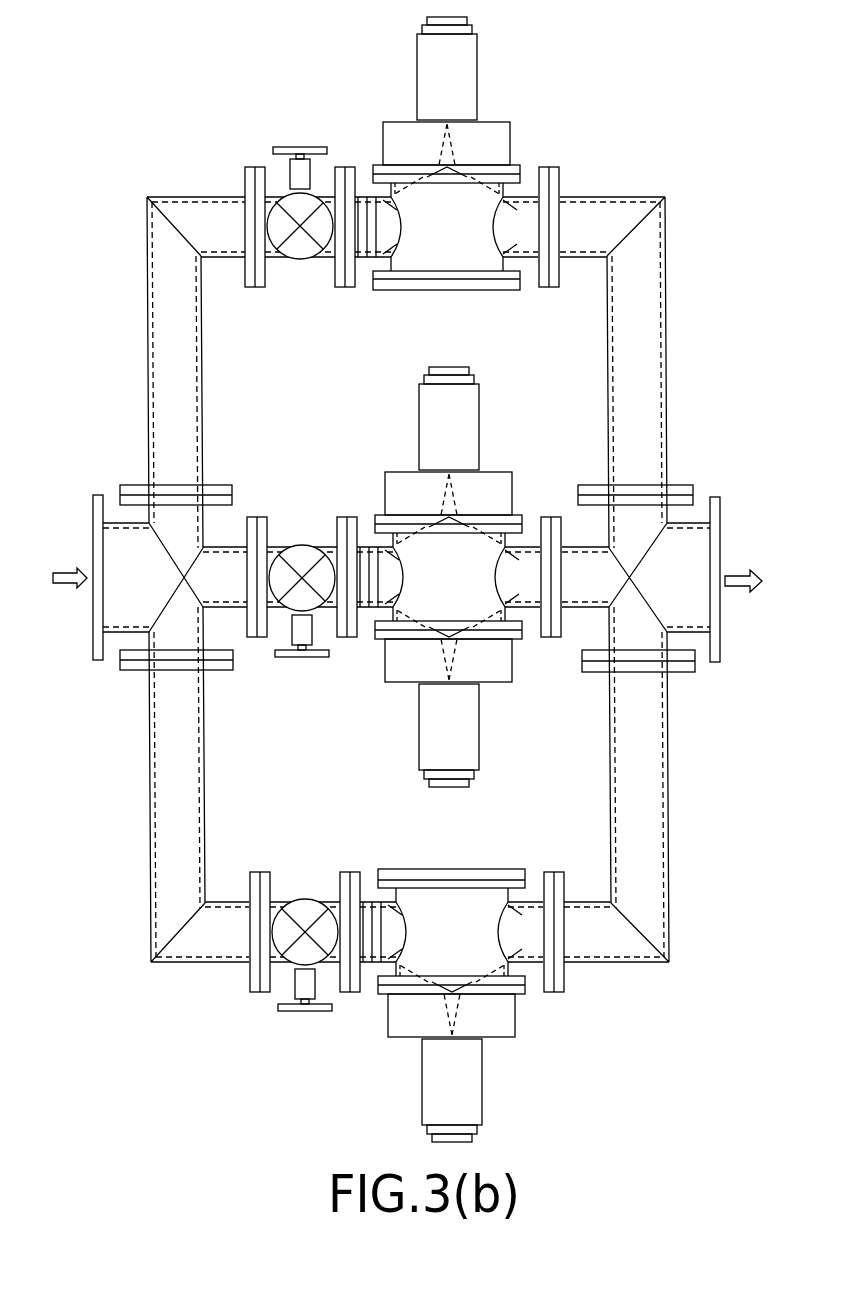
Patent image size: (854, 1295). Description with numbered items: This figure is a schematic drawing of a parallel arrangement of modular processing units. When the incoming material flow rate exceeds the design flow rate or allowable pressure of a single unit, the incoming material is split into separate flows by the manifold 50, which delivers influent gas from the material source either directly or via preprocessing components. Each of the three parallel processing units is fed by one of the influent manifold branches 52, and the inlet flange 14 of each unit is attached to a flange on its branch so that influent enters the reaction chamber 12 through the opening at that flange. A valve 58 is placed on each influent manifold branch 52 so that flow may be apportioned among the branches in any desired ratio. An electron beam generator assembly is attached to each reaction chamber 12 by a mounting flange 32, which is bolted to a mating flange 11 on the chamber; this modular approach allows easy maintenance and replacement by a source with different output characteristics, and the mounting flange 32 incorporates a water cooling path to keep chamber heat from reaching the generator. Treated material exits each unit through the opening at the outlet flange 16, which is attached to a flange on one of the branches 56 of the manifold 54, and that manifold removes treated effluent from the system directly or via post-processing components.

The mating flange 11 is at (371, 172).
The reaction chamber 12 is at (520, 197).
The inlet flange 14 is at (348, 287).
The outlet flange 16 is at (546, 287).
The mounting flange 32 is at (516, 165).
The manifold 50 is at (101, 496).
The influent manifold branch 52 is at (147, 340).
The manifold 54 is at (715, 497).
The branch 56 is at (668, 280).
The valve 58 is at (295, 148).